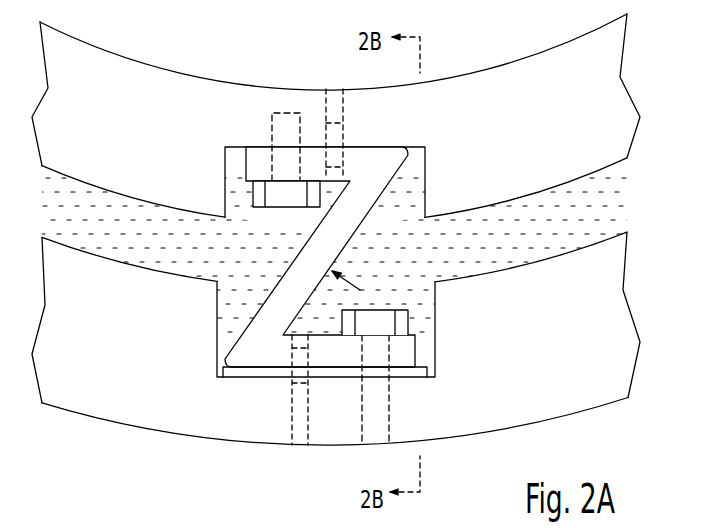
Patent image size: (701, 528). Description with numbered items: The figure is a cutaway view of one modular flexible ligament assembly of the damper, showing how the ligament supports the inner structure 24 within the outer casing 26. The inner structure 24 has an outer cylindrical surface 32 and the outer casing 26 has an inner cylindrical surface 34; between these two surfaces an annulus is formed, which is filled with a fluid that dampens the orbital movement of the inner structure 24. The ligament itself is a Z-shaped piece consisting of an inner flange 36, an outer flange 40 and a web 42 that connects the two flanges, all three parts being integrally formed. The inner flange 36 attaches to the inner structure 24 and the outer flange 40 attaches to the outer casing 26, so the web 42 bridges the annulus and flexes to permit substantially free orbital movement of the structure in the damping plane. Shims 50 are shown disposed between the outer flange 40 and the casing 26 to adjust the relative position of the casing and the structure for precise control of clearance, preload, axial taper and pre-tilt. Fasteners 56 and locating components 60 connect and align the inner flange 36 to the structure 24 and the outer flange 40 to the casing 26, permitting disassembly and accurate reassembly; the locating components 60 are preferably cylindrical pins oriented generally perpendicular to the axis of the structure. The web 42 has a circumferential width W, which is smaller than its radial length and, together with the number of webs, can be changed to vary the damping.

The inner structure 24 is at (522, 72).
The outer casing 26 is at (598, 392).
The outer cylindrical surface 32 is at (130, 197).
The inner cylindrical surface 34 is at (463, 278).
The inner flange 36 is at (365, 147).
The outer flange 40 is at (328, 334).
The web 42 is at (273, 286).
The shims 50 is at (232, 372).
The fasteners 56 is at (290, 112).
The locating components 60 is at (325, 146).
The circumferential width W is at (297, 248).